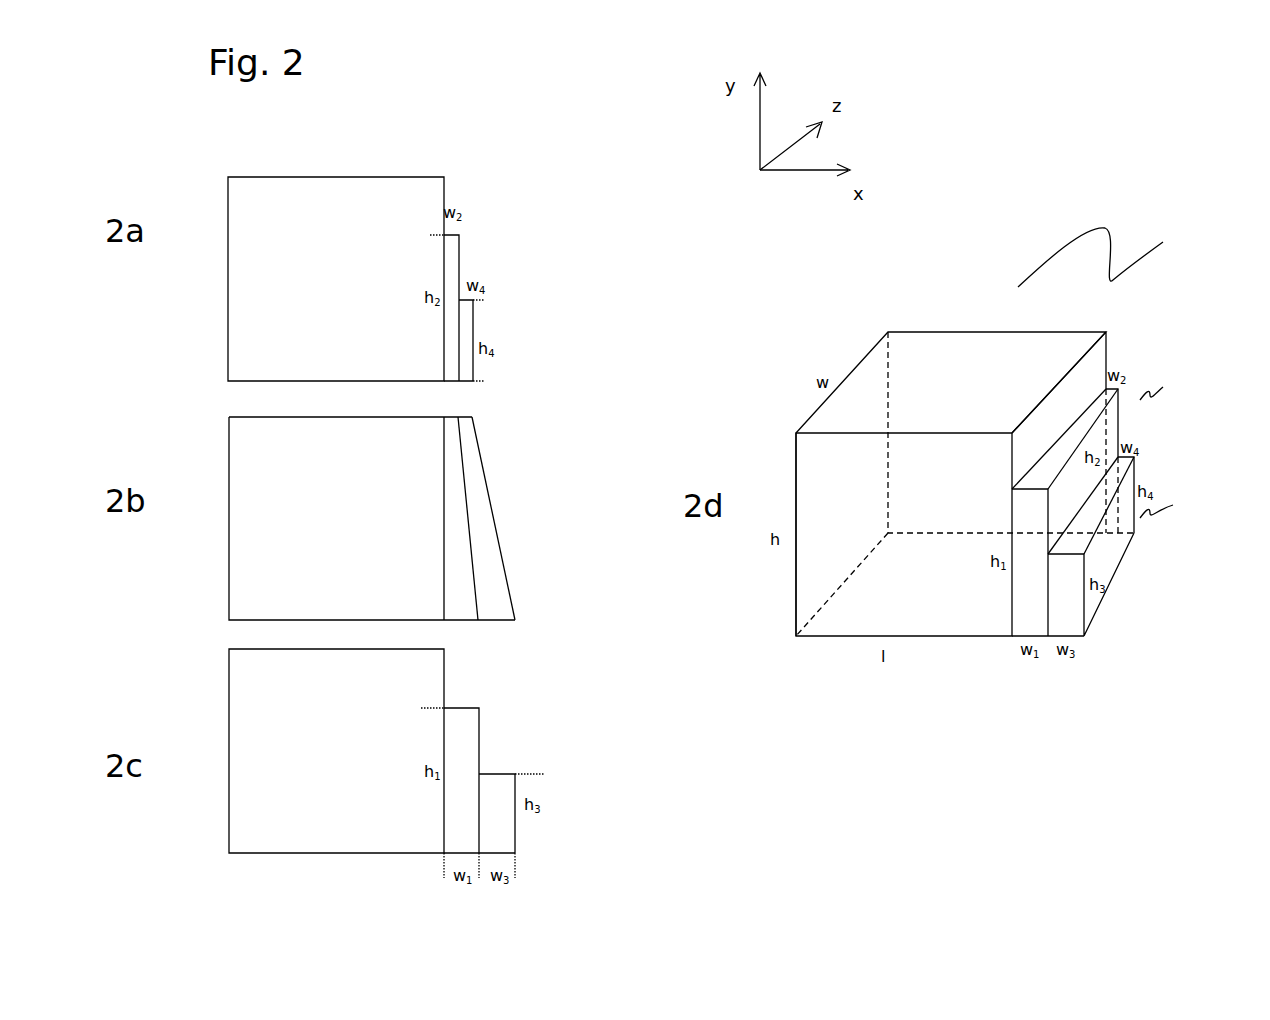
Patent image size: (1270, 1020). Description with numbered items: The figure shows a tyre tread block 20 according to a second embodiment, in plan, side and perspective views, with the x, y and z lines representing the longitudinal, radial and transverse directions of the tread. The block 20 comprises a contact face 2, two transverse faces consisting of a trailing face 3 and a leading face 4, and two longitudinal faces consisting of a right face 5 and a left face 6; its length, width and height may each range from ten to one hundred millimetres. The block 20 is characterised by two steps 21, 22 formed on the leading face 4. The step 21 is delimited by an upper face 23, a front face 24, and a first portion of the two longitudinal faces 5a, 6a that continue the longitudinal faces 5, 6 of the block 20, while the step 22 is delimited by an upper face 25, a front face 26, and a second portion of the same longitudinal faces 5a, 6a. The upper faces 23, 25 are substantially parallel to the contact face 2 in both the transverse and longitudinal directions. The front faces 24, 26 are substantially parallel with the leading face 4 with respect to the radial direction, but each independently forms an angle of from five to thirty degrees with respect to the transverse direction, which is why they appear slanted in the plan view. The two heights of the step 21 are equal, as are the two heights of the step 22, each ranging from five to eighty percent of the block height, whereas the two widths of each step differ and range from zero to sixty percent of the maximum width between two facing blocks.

The contact face 2 is at (855, 396).
The trailing face 3 is at (837, 488).
The leading face 4 is at (1090, 361).
The right face 5 is at (1005, 375).
The first portion of longitudinal face 5a is at (459, 328).
The left face 6 is at (927, 562).
The first portion of longitudinal face 6a is at (493, 818).
The block 20 is at (1117, 257).
The step 21 is at (1167, 388).
The step 22 is at (1173, 506).
The upper face 23 is at (451, 475).
The front face 24 is at (473, 544).
The upper face 25 is at (479, 504).
The front face 26 is at (510, 587).